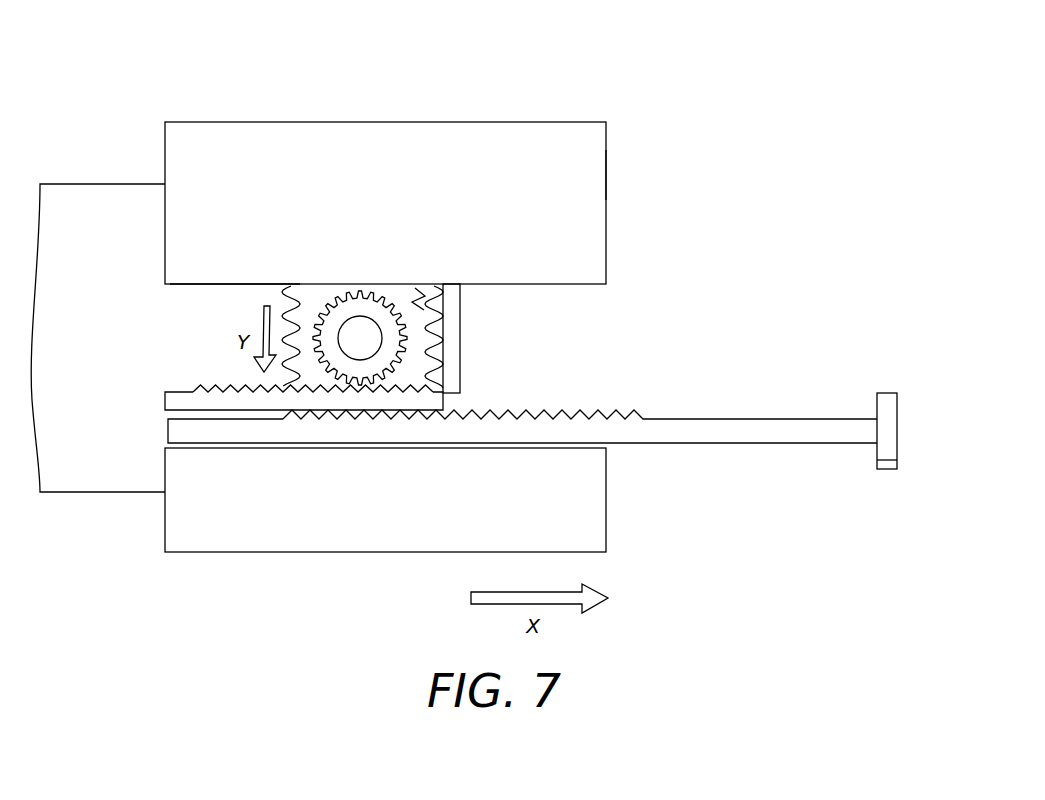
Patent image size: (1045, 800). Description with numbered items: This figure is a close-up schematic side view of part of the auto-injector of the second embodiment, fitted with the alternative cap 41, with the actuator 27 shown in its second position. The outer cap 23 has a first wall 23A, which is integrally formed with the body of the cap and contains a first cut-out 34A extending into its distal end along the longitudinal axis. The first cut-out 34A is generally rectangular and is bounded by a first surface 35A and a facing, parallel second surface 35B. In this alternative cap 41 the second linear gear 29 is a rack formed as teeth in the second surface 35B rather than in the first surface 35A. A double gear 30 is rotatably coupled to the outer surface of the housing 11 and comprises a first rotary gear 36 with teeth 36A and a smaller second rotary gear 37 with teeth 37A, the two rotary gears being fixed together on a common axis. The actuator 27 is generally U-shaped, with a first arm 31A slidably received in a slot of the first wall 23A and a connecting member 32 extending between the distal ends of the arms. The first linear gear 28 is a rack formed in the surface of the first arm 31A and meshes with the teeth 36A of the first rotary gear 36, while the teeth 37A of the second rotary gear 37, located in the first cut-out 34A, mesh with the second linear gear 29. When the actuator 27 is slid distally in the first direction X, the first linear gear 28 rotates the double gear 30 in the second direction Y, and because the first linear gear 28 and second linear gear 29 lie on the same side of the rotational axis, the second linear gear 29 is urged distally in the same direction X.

The alternative cap 41 is at (194, 80).
The outer cap 23 is at (540, 130).
The first wall 23A is at (596, 170).
The first surface 35A is at (218, 285).
The first cut-out 34A is at (178, 337).
The second surface 35B is at (172, 392).
The second linear gear 29 is at (225, 388).
The double gear 30 is at (378, 298).
The second rotary gear 37 is at (408, 298).
The teeth 37A is at (322, 296).
The first rotary gear 36 is at (432, 292).
The teeth 36A is at (442, 336).
The first linear gear 28 is at (560, 410).
The first arm 31A is at (808, 444).
The connecting member 32 is at (893, 428).
The actuator 27 is at (897, 470).
The housing 11 is at (97, 492).